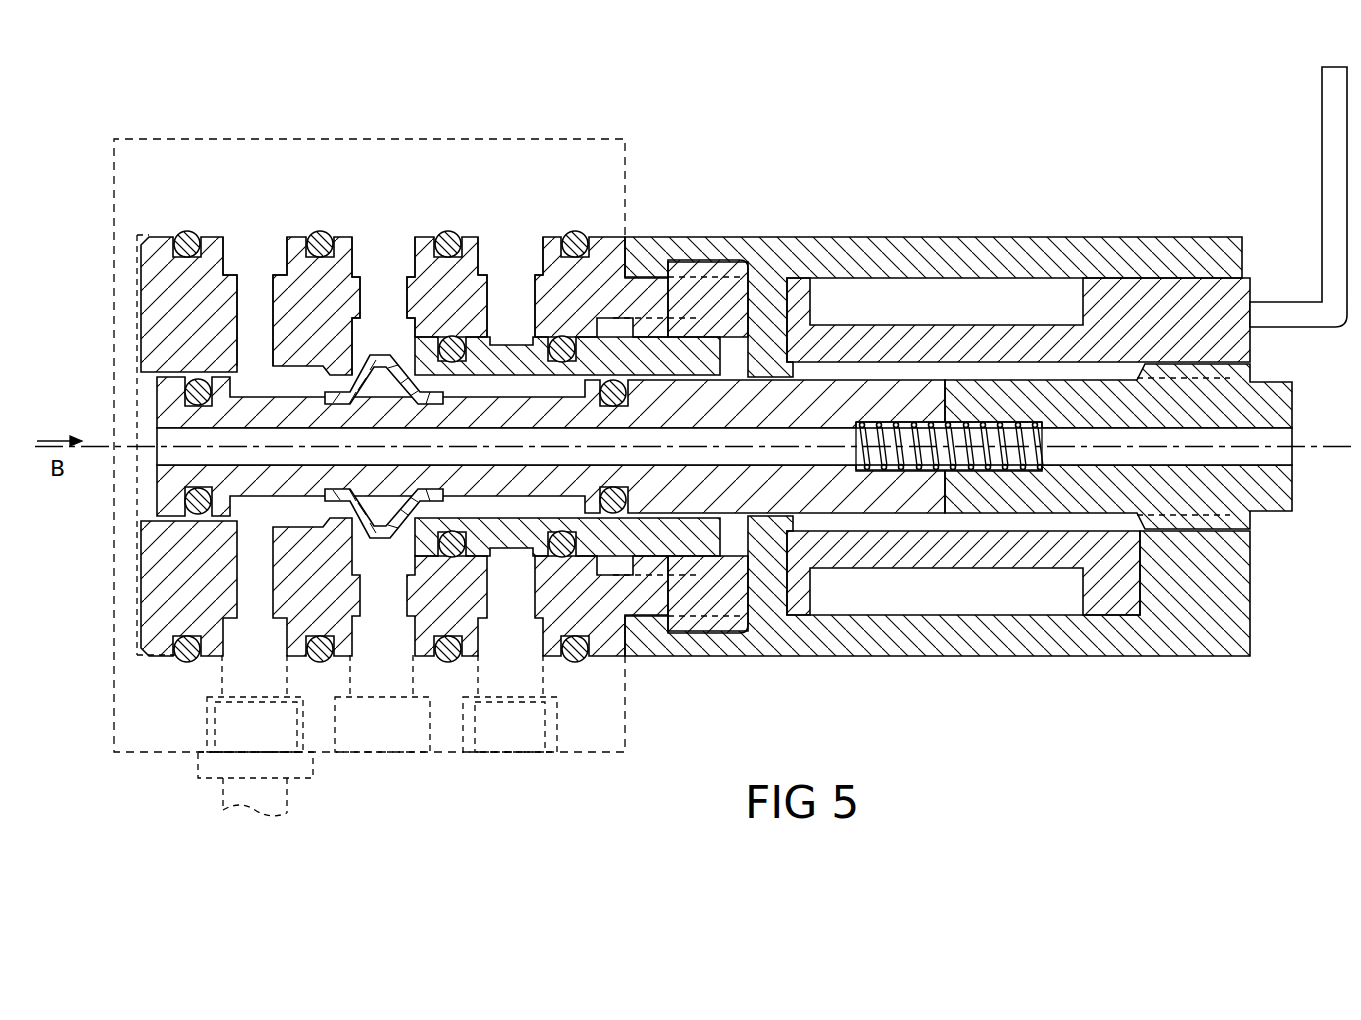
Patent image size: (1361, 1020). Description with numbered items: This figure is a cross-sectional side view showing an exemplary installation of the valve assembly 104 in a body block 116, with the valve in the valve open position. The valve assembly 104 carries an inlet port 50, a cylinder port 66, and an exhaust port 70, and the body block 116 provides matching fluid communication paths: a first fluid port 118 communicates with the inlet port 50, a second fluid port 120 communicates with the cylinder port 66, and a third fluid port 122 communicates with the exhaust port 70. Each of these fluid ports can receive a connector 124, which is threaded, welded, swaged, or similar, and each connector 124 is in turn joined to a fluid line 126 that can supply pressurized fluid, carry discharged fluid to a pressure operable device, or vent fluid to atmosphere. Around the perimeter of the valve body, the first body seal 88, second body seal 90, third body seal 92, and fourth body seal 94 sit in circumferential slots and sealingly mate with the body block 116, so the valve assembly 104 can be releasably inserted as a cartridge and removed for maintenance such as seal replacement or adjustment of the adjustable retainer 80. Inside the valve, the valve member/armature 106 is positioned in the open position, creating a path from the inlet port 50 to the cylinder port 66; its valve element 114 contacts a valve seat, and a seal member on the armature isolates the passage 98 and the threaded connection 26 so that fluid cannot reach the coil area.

The threaded connection 26 is at (1245, 375).
The inlet port 50 is at (264, 248).
The cylinder port 66 is at (390, 248).
The exhaust port 70 is at (518, 248).
The adjustable retainer 80 is at (748, 345).
The first body seal 88 is at (183, 660).
The second body seal 90 is at (318, 662).
The third body seal 92 is at (450, 662).
The fourth body seal 94 is at (578, 661).
The passage 98 is at (945, 361).
The valve assembly 104 is at (736, 186).
The valve member/armature 106 is at (665, 378).
The valve element 114 is at (383, 548).
The body block 116 is at (292, 139).
The first fluid port 118 is at (207, 708).
The second fluid port 120 is at (435, 720).
The third fluid port 122 is at (560, 716).
The connector 124 is at (198, 762).
The fluid line 126 is at (218, 800).